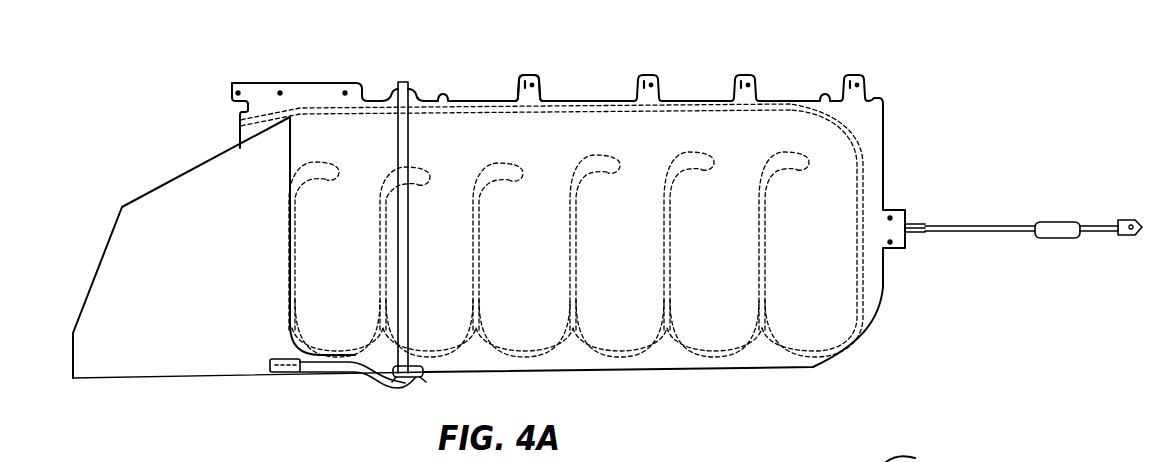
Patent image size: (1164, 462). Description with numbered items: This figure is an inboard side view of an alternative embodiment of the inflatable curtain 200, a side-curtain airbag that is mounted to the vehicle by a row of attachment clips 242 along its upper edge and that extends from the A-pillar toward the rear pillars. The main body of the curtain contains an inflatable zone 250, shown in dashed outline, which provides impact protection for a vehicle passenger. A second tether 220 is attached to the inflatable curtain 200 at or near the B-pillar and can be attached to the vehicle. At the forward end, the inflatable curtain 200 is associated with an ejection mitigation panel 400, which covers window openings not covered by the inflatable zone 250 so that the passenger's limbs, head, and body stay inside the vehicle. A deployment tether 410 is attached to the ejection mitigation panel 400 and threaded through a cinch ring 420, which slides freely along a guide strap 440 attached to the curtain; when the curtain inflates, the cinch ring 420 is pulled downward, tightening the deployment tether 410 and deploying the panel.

The inflatable curtain 200 is at (787, 66).
The second tether 220 is at (1000, 224).
The attachment clips 242 is at (548, 85).
The inflatable zone 250 is at (633, 248).
The ejection mitigation panel 400 is at (178, 214).
The deployment tether 410 is at (370, 380).
The cinch ring 420 is at (426, 380).
The guide strap 440 is at (851, 461).